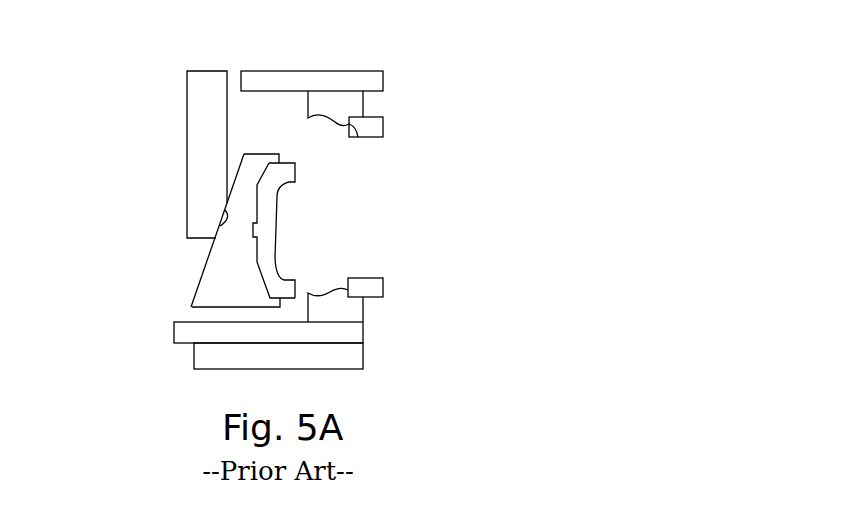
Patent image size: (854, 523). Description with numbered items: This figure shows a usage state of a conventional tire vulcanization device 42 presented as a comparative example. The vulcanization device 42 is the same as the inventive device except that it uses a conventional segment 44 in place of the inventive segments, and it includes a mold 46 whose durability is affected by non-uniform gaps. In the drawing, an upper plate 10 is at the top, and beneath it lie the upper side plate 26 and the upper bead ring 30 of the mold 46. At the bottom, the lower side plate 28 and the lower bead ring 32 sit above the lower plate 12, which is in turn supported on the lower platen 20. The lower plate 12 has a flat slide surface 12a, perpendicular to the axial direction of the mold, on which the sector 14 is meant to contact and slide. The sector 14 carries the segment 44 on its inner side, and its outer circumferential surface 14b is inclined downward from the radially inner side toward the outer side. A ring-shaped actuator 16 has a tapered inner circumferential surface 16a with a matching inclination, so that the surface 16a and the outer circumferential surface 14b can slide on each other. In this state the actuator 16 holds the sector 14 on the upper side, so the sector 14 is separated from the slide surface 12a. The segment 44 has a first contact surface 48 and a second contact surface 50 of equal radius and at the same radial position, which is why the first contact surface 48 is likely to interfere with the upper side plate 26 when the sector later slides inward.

The vulcanization device 42 is at (80, 73).
The upper plate 10 is at (381, 81).
The upper side plate 26 is at (358, 106).
The upper bead ring 30 is at (378, 127).
The actuator 16 is at (194, 146).
The tapered inner circumferential surface 16a is at (217, 220).
The outer circumferential surface 14b is at (203, 265).
The sector 14 is at (205, 291).
The slide surface 12a is at (186, 313).
The first contact surface 48 is at (299, 174).
The segment 44 is at (267, 242).
The second contact surface 50 is at (296, 288).
The mold 46 is at (404, 211).
The lower bead ring 32 is at (382, 289).
The lower side plate 28 is at (358, 310).
The lower plate 12 is at (358, 333).
The lower platen 20 is at (358, 358).